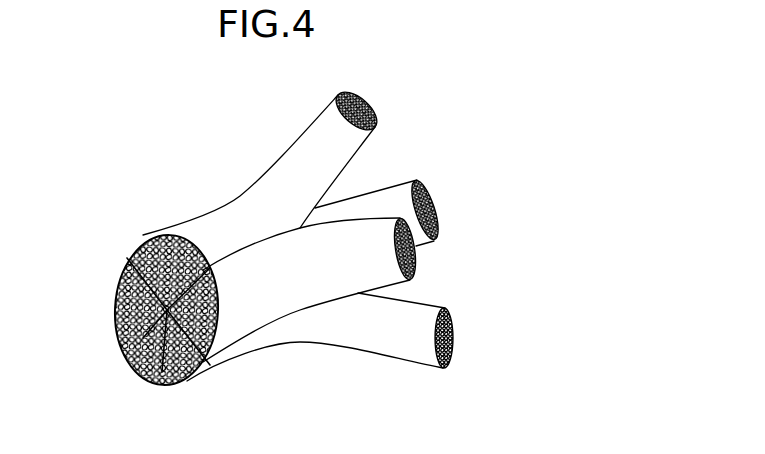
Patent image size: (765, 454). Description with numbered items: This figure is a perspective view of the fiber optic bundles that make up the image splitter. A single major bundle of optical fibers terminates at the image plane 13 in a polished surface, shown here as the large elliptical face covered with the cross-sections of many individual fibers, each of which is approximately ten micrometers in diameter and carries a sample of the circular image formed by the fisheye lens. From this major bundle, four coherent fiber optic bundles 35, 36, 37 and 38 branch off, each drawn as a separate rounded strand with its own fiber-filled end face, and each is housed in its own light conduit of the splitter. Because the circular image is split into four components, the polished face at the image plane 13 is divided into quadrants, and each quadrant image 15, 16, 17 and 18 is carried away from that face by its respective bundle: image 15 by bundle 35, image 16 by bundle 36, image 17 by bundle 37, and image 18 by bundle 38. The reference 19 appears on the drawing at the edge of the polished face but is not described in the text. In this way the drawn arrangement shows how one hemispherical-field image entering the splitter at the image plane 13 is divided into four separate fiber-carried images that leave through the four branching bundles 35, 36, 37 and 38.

The image plane 13 is at (115, 307).
The image 15 is at (140, 245).
The image 16 is at (122, 343).
The image 17 is at (147, 377).
The image 18 is at (217, 312).
The fiber sub-bundle 19 is at (123, 265).
The coherent fiber optic bundle 35 is at (300, 143).
The coherent fiber optic bundle 36 is at (382, 189).
The coherent fiber optic bundle 37 is at (423, 303).
The coherent fiber optic bundle 38 is at (322, 328).